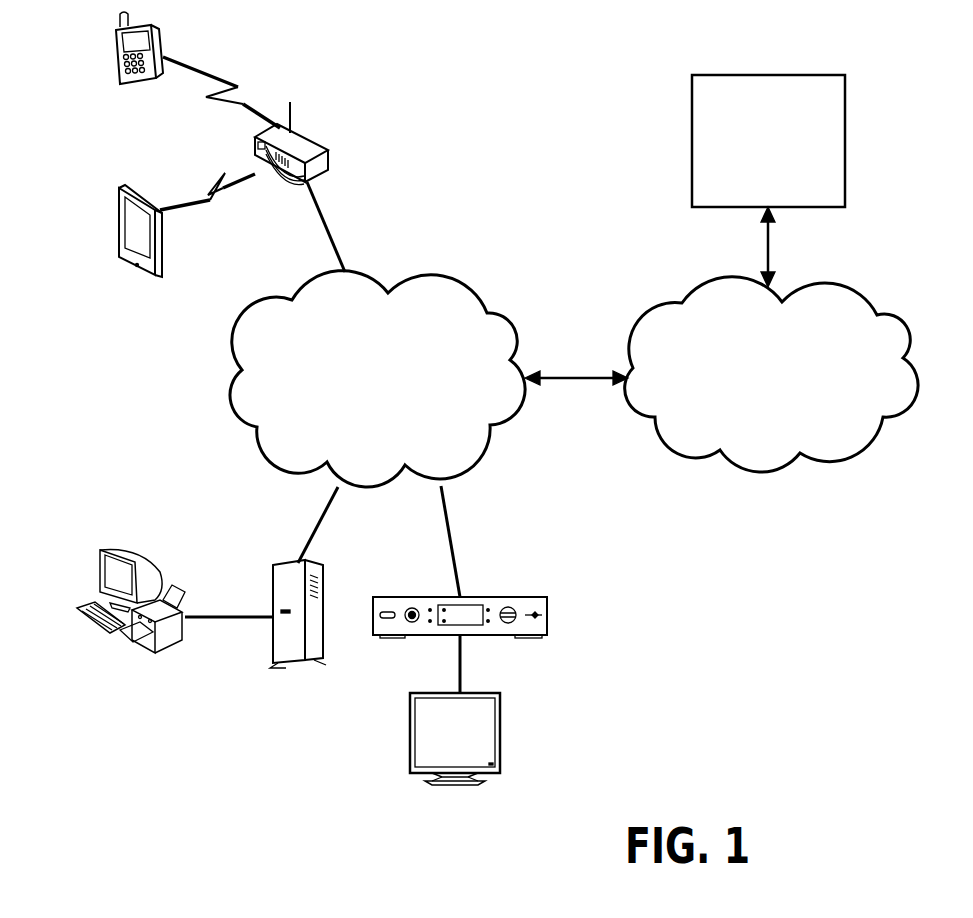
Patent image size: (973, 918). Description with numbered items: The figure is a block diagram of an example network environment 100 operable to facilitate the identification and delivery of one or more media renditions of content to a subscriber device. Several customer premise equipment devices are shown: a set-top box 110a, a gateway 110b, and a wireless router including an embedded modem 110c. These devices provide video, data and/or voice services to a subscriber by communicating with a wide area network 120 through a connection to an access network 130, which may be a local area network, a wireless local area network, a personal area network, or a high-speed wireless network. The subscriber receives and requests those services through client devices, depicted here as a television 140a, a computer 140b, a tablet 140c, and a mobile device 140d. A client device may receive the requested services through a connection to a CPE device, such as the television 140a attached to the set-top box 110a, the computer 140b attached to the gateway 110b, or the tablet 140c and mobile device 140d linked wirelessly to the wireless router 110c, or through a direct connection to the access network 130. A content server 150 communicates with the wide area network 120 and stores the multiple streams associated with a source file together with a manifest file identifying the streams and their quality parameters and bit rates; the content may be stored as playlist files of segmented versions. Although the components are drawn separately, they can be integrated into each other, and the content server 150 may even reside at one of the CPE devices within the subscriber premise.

The network environment 100 is at (895, 744).
The set-top box 110a is at (480, 594).
The gateway 110b is at (302, 665).
The wireless router including an embedded modem 110c is at (318, 145).
The wide area network 120 is at (762, 473).
The access network 130 is at (308, 470).
The television 140a is at (455, 786).
The computer 140b is at (110, 548).
The tablet 140c is at (128, 263).
The mobile device 140d is at (125, 80).
The content server 150 is at (783, 73).